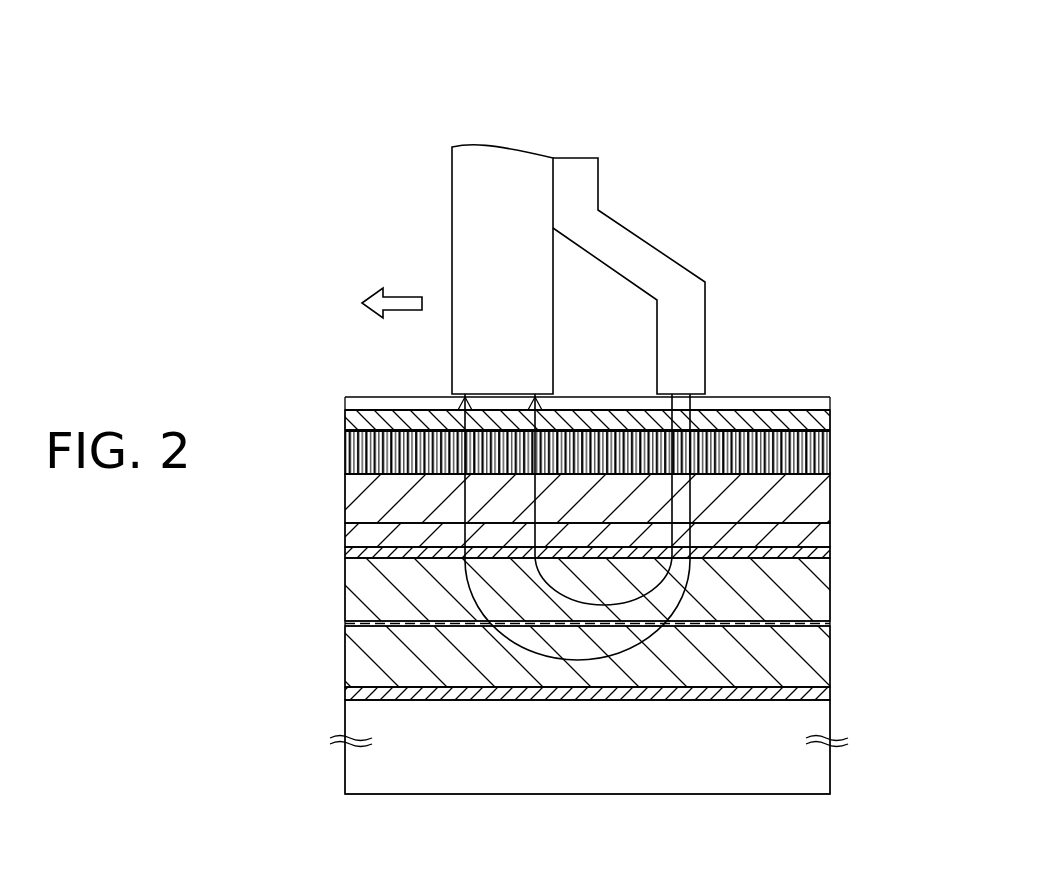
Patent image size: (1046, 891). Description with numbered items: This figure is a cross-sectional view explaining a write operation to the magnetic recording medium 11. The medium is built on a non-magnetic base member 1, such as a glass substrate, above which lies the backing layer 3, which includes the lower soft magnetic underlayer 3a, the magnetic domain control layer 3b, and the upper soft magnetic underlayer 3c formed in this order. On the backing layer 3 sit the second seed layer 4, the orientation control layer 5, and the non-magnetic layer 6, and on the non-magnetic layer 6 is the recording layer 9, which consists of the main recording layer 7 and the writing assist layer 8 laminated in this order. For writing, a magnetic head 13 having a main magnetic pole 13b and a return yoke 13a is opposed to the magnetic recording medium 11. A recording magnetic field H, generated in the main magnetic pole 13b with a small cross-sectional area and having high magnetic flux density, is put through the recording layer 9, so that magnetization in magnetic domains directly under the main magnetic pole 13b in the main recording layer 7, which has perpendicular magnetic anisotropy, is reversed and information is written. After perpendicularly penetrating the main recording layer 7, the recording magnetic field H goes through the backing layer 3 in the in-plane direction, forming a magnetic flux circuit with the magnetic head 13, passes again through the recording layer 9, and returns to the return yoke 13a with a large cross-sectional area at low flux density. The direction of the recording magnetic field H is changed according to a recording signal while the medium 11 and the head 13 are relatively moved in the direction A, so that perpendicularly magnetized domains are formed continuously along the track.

The non-magnetic base member 1 is at (494, 772).
The backing layer 3 is at (908, 568).
The lower soft magnetic underlayer 3a is at (820, 659).
The magnetic domain control layer 3b is at (820, 625).
The upper soft magnetic underlayer 3c is at (818, 597).
The second seed layer 4 is at (348, 551).
The orientation control layer 5 is at (348, 535).
The non-magnetic layer 6 is at (820, 504).
The main recording layer 7 is at (826, 452).
The writing assist layer 8 is at (820, 422).
The recording layer 9 is at (906, 392).
The magnetic recording medium 11 is at (278, 395).
The magnetic head 13 is at (612, 68).
The return yoke 13a is at (500, 160).
The main magnetic pole 13b is at (577, 168).
The direction A is at (400, 297).
The recording magnetic field H is at (575, 663).